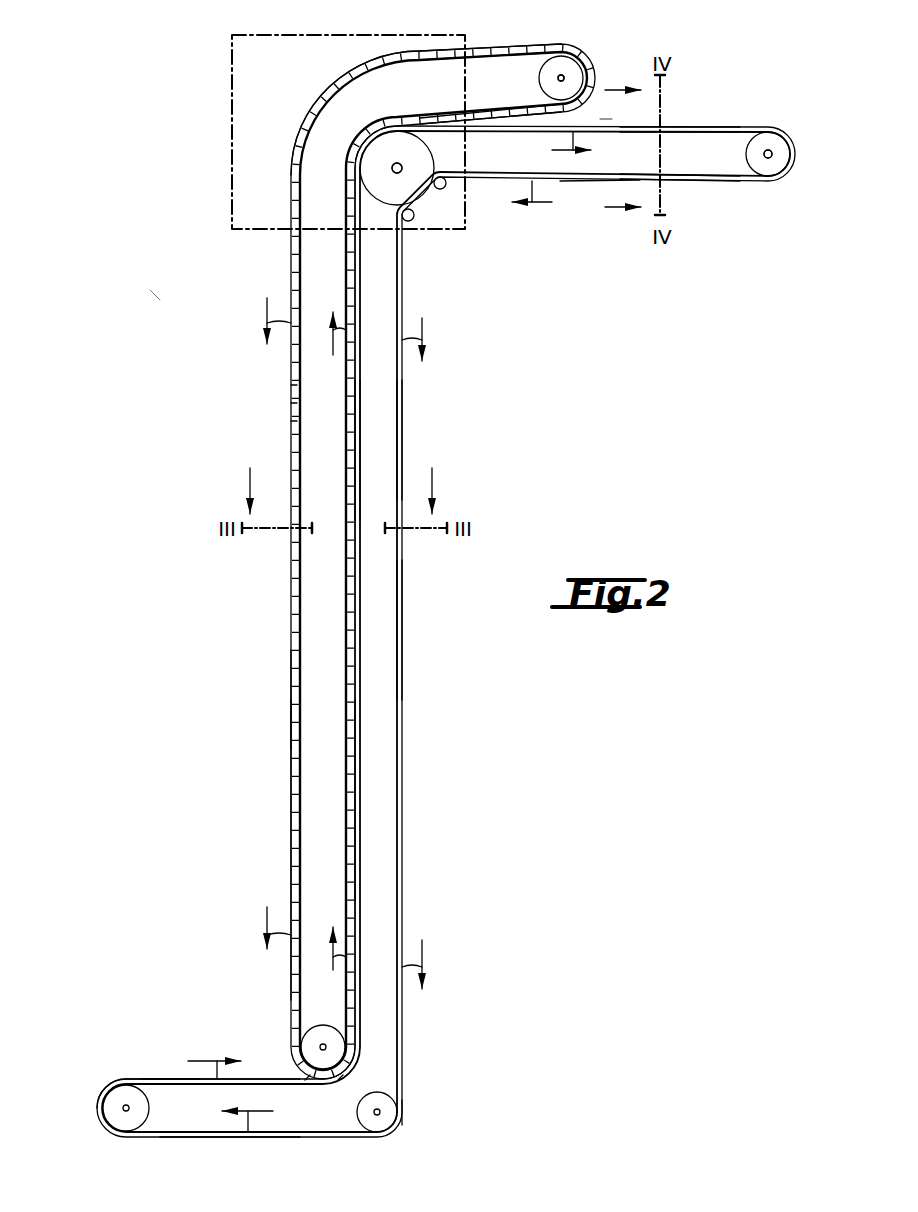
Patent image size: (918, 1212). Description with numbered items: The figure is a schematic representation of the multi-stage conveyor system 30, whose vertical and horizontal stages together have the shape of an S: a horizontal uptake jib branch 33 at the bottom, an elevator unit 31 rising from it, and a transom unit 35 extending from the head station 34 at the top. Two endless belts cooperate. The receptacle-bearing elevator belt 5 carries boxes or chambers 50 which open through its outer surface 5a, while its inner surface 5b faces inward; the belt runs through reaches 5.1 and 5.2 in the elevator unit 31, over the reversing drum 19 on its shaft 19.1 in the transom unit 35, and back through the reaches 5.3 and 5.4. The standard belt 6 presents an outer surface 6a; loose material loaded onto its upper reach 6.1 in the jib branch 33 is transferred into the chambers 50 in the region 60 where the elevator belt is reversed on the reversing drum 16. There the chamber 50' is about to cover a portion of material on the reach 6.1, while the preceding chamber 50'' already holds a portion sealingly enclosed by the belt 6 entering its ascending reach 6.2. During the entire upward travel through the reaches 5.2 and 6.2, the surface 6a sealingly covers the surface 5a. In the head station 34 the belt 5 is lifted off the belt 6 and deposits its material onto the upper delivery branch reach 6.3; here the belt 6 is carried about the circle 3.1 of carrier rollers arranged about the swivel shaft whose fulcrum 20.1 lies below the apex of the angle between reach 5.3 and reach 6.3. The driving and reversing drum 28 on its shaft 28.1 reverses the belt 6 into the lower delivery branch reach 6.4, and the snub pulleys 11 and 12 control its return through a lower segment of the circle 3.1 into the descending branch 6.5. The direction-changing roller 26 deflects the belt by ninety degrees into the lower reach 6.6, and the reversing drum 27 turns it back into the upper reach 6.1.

The elevator belt 5 is at (288, 638).
The reach of the elevator belt 5.1 is at (295, 843).
The ascending reach of the elevator belt 5.2 is at (352, 778).
The reach of the elevator belt 5.3 is at (505, 110).
The reach of the elevator belt 5.4 is at (498, 50).
The outer surface of the elevator belt 5a is at (290, 778).
The inner surface of the elevator belt 5b is at (338, 92).
The standard belt 6 is at (701, 185).
The upper reach of the standard belt 6.1 is at (163, 1079).
The ascending reach of the standard belt 6.2 is at (360, 462).
The upper delivery branch reach of the standard belt 6.3 is at (708, 127).
The lower delivery branch reach of the standard belt 6.4 is at (728, 181).
The descending branch of the standard belt 6.5 is at (400, 620).
The lower reach of the standard belt 6.6 is at (193, 1132).
The outer surface of the standard belt 6a is at (404, 446).
The circle of carrier rollers 3.1 is at (380, 205).
The fulcrum of the swivel shaft 20.1 is at (397, 168).
The snub pulley 11 is at (446, 187).
The snub pulley 12 is at (409, 222).
The reversing drum 16 is at (317, 1033).
The reversing drum 19 is at (576, 68).
The shaft of the reversing drum 19.1 is at (561, 78).
The direction-changing roller 26 is at (388, 1104).
The reversing drum 27 is at (113, 1100).
The driving and reversing drum 28 is at (773, 147).
The shaft of the driving and reversing drum 28.1 is at (773, 177).
The multi-stage conveyor system 30 is at (157, 297).
The elevator unit 31 is at (280, 703).
The uptake jib branch 33 is at (137, 1073).
The head station 34 is at (232, 111).
The transom unit 35 is at (598, 186).
The receptacles 50 is at (261, 406).
The receptacle 50' is at (299, 1098).
The receptacle 50'' is at (338, 1098).
The transfer region 60 is at (412, 1127).